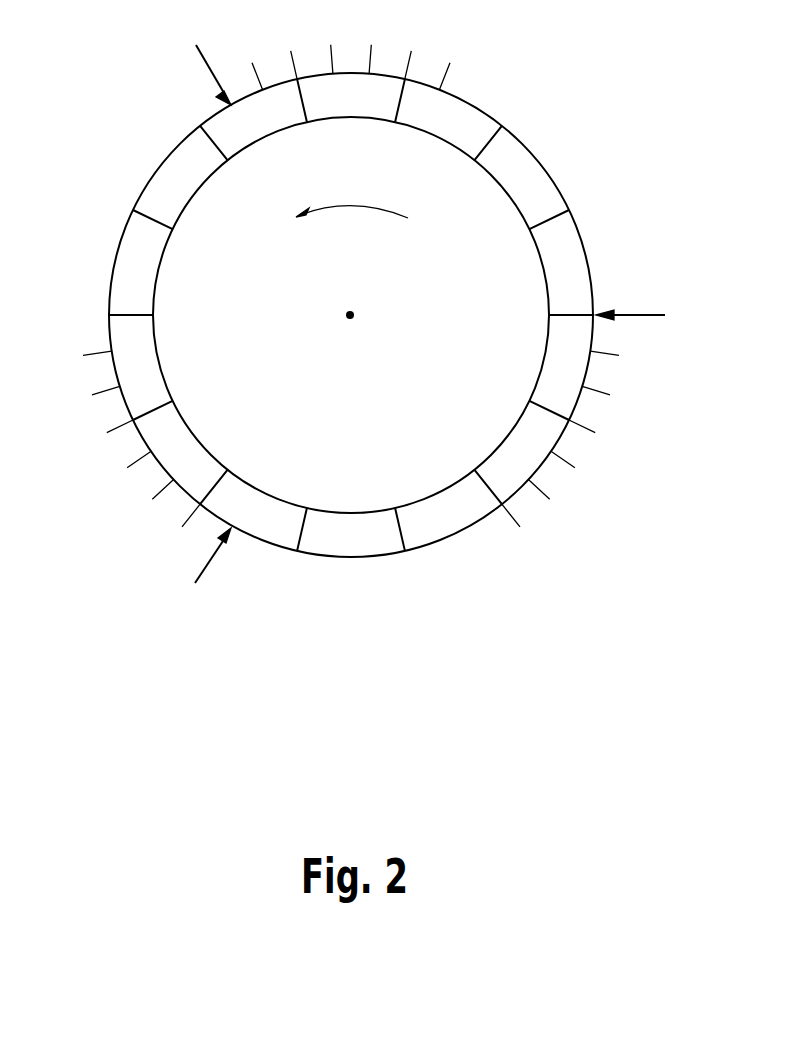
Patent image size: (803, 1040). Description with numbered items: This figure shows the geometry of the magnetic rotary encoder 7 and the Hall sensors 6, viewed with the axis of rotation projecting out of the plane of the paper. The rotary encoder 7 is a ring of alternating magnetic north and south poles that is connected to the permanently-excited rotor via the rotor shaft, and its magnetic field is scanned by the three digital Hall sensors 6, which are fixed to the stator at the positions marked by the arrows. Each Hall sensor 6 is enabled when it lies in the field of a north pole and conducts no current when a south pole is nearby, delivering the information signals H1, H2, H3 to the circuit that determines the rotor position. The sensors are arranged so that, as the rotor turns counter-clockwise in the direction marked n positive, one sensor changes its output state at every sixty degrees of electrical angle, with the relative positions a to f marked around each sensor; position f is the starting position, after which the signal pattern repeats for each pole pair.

The Hall sensor 6 is at (382, 331).
The magnetic rotary encoder 7 is at (520, 140).
The information signal H1 is at (648, 315).
The information signal H2 is at (200, 572).
The information signal H3 is at (200, 60).